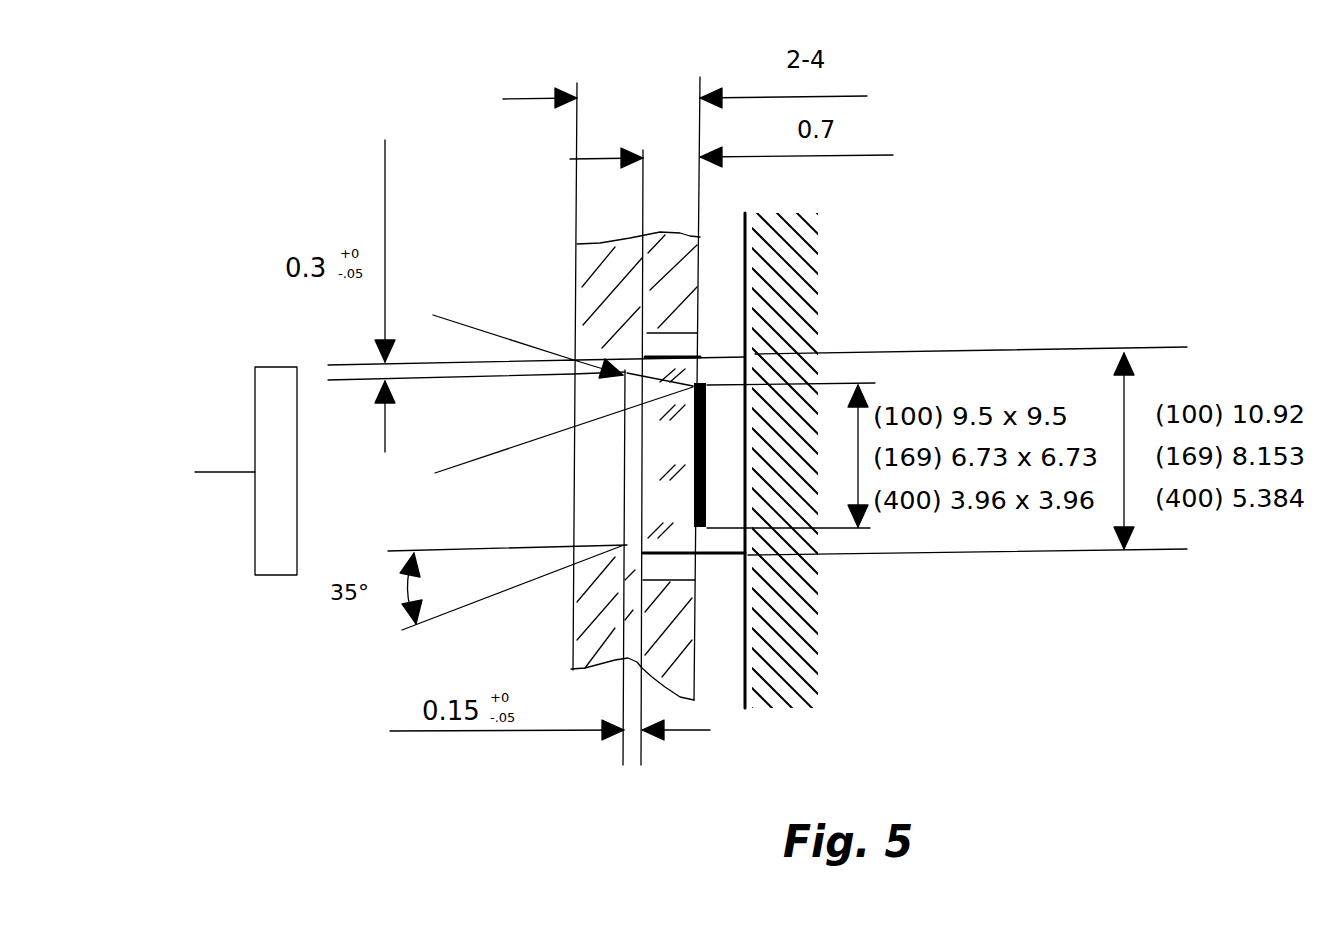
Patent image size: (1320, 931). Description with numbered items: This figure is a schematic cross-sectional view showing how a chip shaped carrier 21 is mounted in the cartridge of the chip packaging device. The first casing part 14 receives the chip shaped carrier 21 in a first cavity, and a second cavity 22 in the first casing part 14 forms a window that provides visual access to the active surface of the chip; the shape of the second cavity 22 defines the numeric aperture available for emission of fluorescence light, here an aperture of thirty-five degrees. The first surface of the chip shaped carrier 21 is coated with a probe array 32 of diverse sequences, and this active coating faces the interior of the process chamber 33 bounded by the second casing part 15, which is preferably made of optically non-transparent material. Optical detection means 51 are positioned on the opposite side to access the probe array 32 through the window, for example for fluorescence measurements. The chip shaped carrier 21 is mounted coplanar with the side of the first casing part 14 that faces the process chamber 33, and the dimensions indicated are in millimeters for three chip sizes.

The first casing part 14 is at (572, 278).
The second casing part 15 is at (772, 683).
The chip shaped carrier 21 is at (673, 532).
The second cavity 22 is at (602, 492).
The probe array 32 is at (710, 433).
The process chamber 33 is at (720, 670).
The optical detection means 51 is at (268, 577).